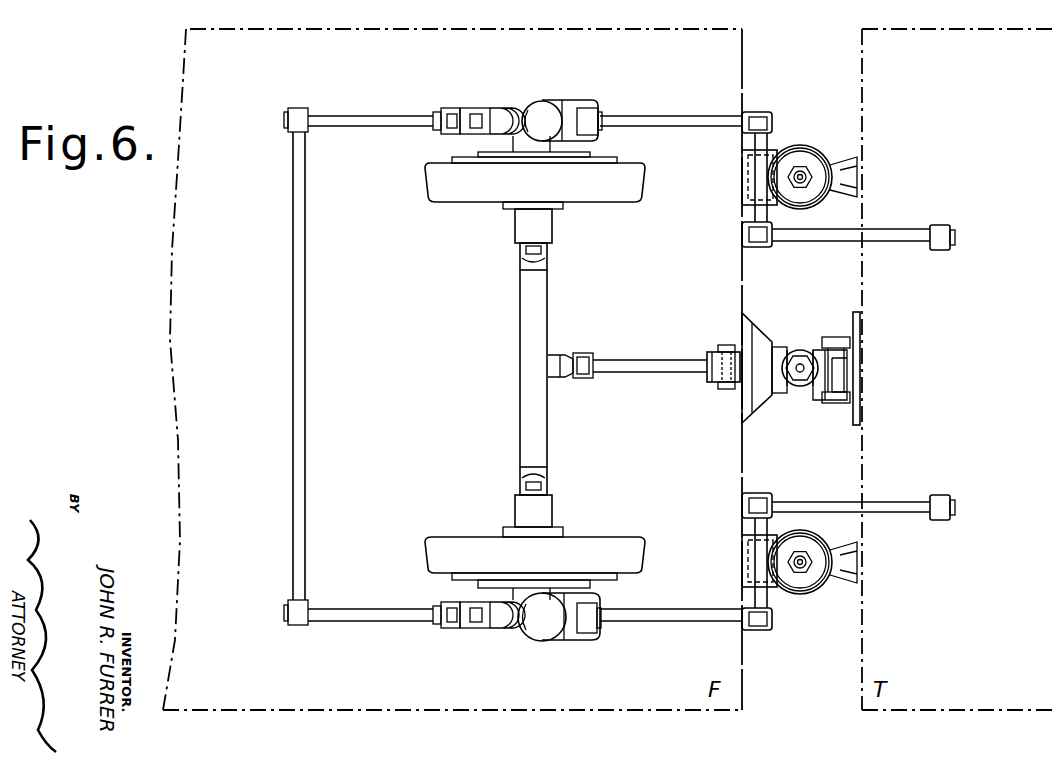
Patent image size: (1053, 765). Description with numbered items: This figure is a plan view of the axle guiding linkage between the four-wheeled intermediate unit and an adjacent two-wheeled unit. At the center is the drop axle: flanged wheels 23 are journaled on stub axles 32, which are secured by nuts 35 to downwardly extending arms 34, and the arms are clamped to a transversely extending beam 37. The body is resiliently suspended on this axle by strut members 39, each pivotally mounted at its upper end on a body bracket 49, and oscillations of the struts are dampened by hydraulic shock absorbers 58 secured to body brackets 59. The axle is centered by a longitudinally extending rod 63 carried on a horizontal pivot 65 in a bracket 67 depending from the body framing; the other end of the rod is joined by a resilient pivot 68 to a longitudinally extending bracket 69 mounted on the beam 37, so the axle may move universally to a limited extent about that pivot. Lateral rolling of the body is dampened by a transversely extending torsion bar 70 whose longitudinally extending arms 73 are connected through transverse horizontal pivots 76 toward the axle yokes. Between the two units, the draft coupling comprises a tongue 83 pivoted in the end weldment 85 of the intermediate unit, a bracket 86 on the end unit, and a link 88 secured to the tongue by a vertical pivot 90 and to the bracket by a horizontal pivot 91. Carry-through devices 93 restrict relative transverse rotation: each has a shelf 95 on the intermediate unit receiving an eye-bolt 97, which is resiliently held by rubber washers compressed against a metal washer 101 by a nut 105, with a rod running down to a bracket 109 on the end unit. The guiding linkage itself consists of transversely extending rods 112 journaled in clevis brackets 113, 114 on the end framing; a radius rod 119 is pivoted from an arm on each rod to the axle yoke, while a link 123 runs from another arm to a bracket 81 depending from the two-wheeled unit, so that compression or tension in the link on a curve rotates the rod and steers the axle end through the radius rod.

The flanged wheels 23 is at (628, 181).
The stub axles 32 is at (518, 148).
The downwardly extending arms 34 is at (523, 226).
The nuts 35 is at (548, 249).
The transversely extending beam 37 is at (522, 414).
The resilient strut member 39 is at (562, 648).
The body bracket 49 is at (585, 110).
The hydraulic shock absorber 58 is at (502, 108).
The body bracket 59 is at (480, 108).
The longitudinally extending rod 63 is at (663, 373).
The horizontal pivot 65 is at (726, 389).
The bracket 67 is at (715, 353).
The resilient pivot 68 is at (590, 374).
The longitudinally extending bracket 69 is at (555, 375).
The torsion bar 70 is at (294, 421).
The longitudinally extending arms 73 is at (380, 118).
The transverse horizontal pivot 76 is at (450, 110).
The bracket 81 is at (940, 250).
The tongue 83 is at (782, 397).
The end weldment 85 is at (752, 332).
The bracket 86 is at (850, 355).
The link 88 is at (814, 400).
The vertical pivot 90 is at (802, 352).
The horizontal pivot 91 is at (836, 338).
The carry-through devices 93 is at (816, 601).
The shelf 95 is at (742, 548).
The eye-bolt 97 is at (804, 556).
The metal washer 101 is at (808, 552).
The nut 105 is at (797, 555).
The bracket 109 is at (842, 580).
The transversely extending rods 112 is at (766, 140).
The clevis bracket 113 is at (755, 112).
The clevis bracket 114 is at (768, 246).
The radius rod 119 is at (668, 116).
The link 123 is at (900, 232).